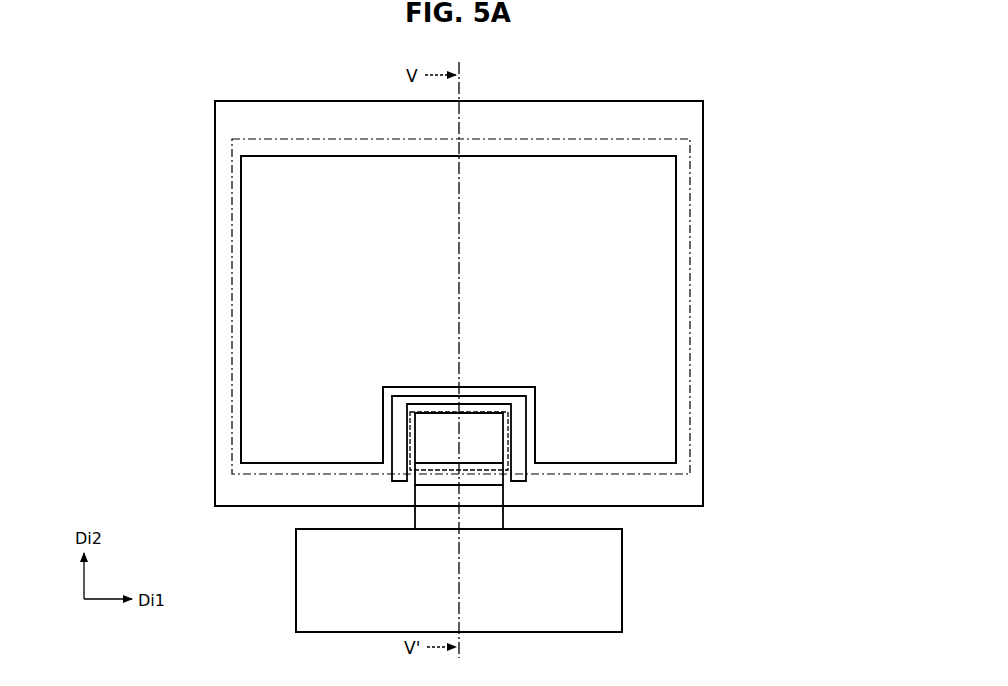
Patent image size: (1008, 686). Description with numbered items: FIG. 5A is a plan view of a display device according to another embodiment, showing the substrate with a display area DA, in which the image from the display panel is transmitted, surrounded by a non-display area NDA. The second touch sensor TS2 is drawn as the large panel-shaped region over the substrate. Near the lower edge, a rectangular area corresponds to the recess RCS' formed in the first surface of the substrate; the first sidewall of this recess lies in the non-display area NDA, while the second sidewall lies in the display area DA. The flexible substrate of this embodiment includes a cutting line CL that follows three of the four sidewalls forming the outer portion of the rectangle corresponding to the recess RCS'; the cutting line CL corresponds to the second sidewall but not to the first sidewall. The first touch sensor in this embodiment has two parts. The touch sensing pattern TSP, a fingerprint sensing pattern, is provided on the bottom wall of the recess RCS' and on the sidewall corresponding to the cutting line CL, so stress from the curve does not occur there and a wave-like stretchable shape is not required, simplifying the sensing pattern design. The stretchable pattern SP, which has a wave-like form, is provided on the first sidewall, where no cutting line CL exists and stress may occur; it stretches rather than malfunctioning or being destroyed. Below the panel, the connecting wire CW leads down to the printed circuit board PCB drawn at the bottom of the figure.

The non-display area NDA is at (687, 122).
The display area DA is at (690, 440).
The second touch sensor TS2 is at (676, 308).
The touch sensing pattern TSP is at (413, 448).
The stretchable pattern SP is at (406, 482).
The recess RCS' is at (559, 479).
The cutting line CL is at (513, 482).
The connecting wire CW is at (495, 517).
The printed circuit board PCB is at (622, 602).